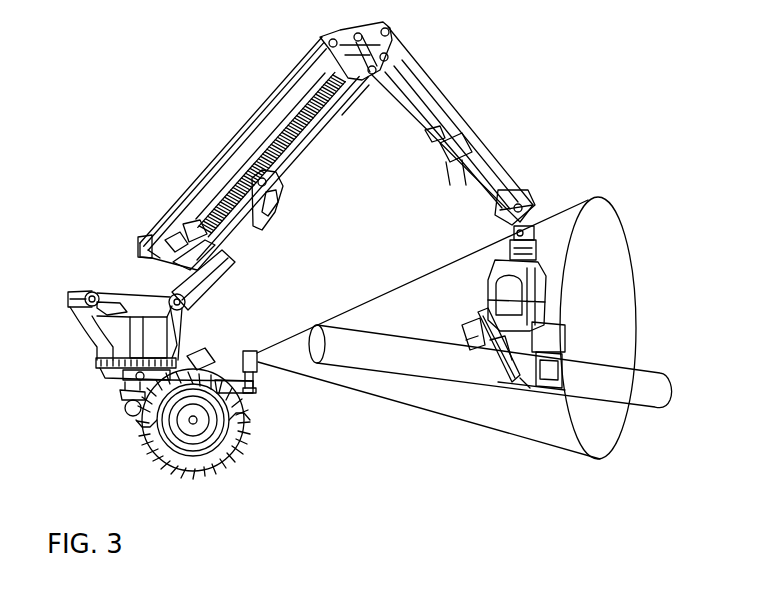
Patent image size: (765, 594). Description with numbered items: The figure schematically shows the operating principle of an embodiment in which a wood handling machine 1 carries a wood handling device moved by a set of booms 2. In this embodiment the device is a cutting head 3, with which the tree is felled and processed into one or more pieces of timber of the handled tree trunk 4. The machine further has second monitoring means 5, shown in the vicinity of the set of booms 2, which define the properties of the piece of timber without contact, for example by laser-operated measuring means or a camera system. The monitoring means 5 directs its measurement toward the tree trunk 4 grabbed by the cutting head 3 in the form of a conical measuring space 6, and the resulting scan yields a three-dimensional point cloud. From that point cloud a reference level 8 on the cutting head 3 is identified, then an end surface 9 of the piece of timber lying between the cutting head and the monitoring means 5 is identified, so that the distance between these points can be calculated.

The wood handling machine 1 is at (73, 266).
The set of booms 2 is at (287, 95).
The cutting head 3 is at (563, 337).
The tree trunk 4 is at (648, 397).
The monitoring means 5 is at (260, 362).
The conical measuring space 6 is at (600, 459).
The reference level 8 is at (475, 312).
The end surface 9 is at (318, 340).